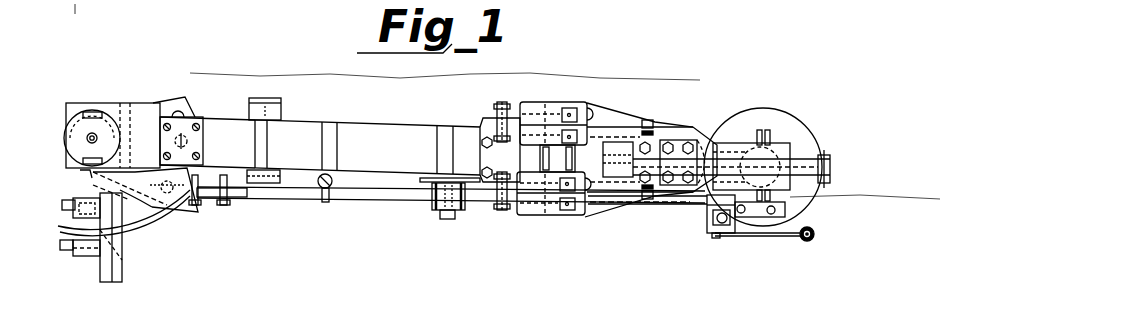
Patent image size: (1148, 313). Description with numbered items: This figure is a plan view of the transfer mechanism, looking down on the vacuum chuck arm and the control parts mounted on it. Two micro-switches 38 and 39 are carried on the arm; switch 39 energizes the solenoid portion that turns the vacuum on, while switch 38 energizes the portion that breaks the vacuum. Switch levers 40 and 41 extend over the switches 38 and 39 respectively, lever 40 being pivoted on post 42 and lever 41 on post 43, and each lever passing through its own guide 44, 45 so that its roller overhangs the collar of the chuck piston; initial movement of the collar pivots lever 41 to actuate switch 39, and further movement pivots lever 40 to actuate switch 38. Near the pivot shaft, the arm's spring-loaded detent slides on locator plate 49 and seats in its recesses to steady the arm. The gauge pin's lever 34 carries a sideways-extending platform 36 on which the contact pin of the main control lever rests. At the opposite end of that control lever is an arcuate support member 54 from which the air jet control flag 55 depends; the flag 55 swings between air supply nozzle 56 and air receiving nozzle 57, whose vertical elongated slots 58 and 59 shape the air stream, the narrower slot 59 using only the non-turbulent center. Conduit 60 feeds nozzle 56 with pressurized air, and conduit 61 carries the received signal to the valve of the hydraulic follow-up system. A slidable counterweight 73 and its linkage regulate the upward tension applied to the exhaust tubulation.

The lever 34 is at (760, 237).
The platform 36 is at (731, 225).
The micro-switch 38 is at (572, 214).
The micro-switch 39 is at (553, 104).
The switch lever 40 is at (628, 197).
The switch lever 41 is at (607, 127).
The post 42 is at (502, 178).
The post 43 is at (508, 140).
The guide 44 is at (648, 202).
The guide 45 is at (652, 120).
The locator plate 49 is at (176, 100).
The arcuate support member 54 is at (156, 214).
The air jet control flag 55 is at (128, 222).
The air supply nozzle 56 is at (86, 257).
The air receiving nozzle 57 is at (92, 178).
The elongated slot 58 is at (122, 258).
The elongated slot 59 is at (86, 209).
The conduit 60 is at (67, 250).
The conduit 61 is at (63, 200).
The counterweight 73 is at (622, 144).